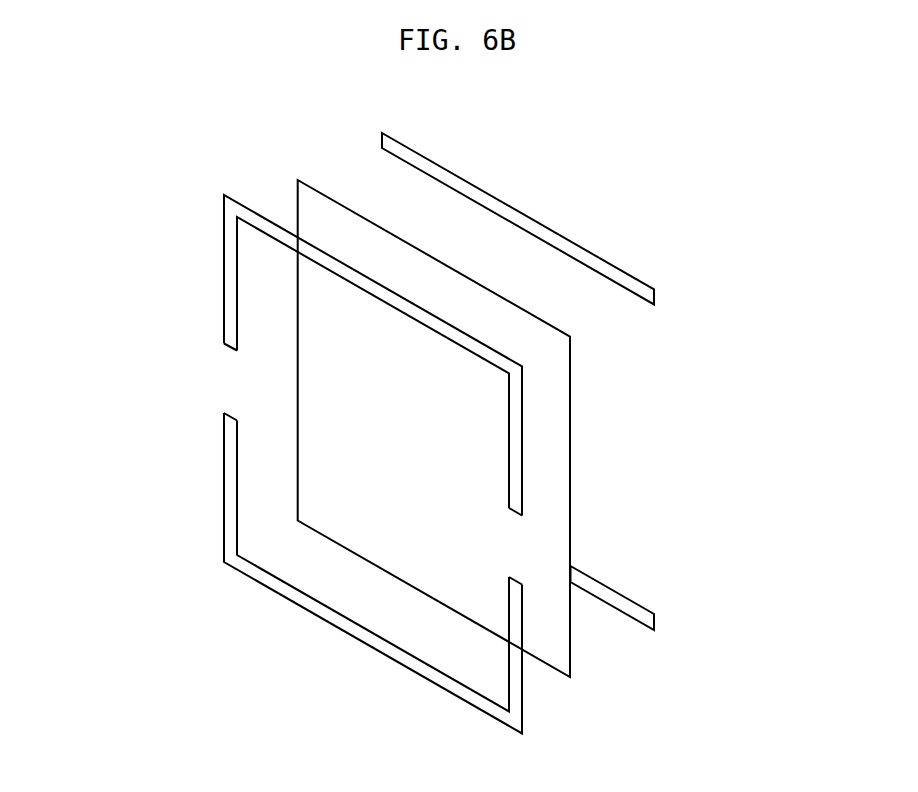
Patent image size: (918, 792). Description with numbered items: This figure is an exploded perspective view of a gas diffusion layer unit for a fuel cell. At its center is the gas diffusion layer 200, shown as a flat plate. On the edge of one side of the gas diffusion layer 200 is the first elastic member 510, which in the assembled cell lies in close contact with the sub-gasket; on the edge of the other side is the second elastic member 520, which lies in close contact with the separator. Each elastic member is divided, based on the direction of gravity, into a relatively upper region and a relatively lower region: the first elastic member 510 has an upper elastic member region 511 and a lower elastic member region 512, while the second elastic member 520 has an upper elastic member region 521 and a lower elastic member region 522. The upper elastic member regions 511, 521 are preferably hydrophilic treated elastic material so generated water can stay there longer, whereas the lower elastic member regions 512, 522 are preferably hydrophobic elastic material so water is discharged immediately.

The gas diffusion layer 200 is at (553, 467).
The first elastic member 510 is at (279, 464).
The upper elastic member region 511 is at (230, 303).
The lower elastic member region 512 is at (319, 573).
The second elastic member 520 is at (619, 383).
The upper elastic member region 521 is at (655, 294).
The lower elastic member region 522 is at (671, 600).